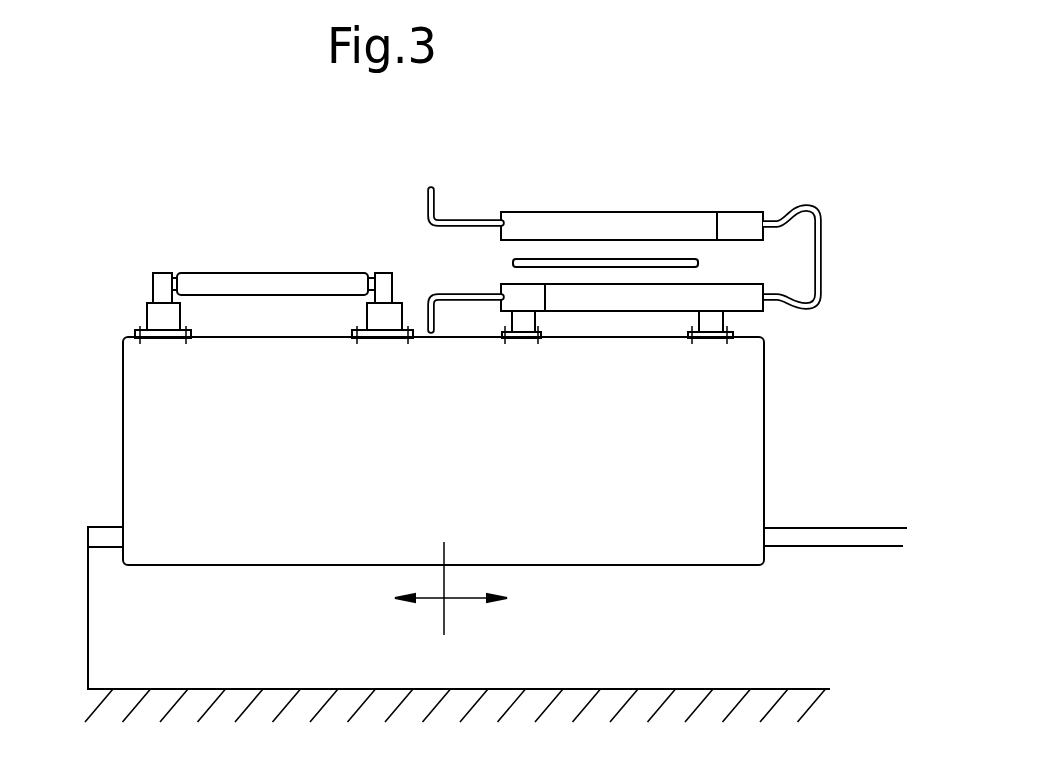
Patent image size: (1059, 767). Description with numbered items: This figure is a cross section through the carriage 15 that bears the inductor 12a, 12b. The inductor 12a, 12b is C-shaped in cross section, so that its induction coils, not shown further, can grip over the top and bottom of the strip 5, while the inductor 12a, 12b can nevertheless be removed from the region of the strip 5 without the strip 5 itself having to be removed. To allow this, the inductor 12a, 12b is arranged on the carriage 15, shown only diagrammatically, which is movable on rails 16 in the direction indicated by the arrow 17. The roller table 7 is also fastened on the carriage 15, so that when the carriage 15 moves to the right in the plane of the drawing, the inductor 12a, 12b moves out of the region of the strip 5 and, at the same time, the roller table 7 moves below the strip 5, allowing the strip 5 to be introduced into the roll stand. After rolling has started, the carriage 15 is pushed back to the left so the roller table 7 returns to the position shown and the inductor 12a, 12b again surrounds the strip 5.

The strip 5 is at (592, 265).
The roller table 7 is at (283, 290).
The inductor 12a is at (647, 227).
The inductor 12b is at (597, 314).
The carriage 15 is at (658, 483).
The rails 16 is at (832, 536).
The arrow 17 is at (451, 609).